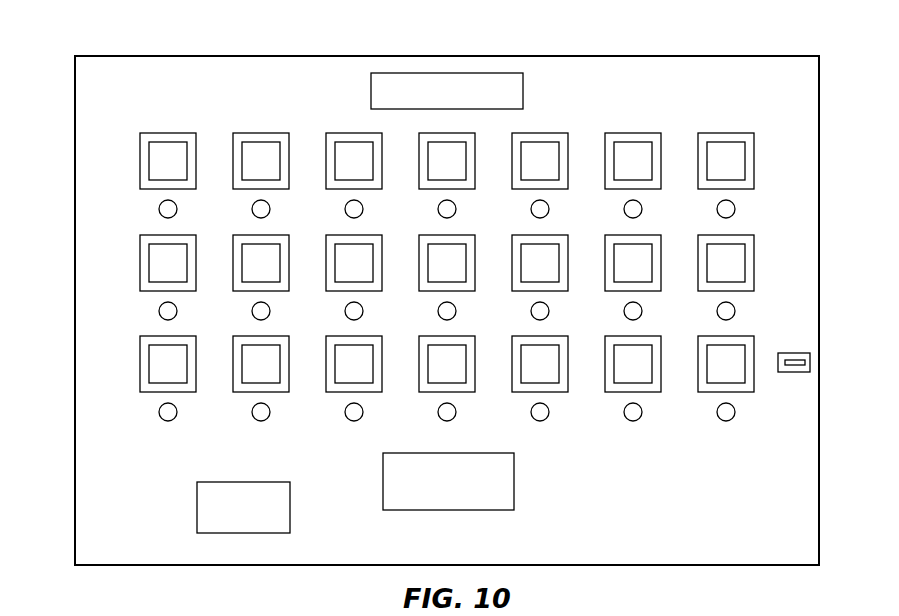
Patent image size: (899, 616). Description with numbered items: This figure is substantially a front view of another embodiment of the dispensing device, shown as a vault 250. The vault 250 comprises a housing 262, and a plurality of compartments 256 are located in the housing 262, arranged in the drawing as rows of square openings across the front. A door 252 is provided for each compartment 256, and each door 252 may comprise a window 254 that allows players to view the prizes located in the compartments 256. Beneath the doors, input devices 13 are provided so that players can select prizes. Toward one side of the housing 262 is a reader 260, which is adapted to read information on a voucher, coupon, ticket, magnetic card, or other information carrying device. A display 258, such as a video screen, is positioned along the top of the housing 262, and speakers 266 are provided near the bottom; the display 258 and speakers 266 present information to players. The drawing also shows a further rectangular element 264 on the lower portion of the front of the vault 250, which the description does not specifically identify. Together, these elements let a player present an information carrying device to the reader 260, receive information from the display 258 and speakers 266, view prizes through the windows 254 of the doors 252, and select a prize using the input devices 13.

The vault 250 is at (723, 56).
The door 252 is at (262, 132).
The window 254 is at (150, 163).
The compartment 256 is at (353, 145).
The display 258 is at (479, 73).
The reader 260 is at (795, 353).
The housing 262 is at (805, 101).
The card reader 264 is at (514, 492).
The speakers 266 is at (197, 504).
The input devices 13 is at (253, 207).